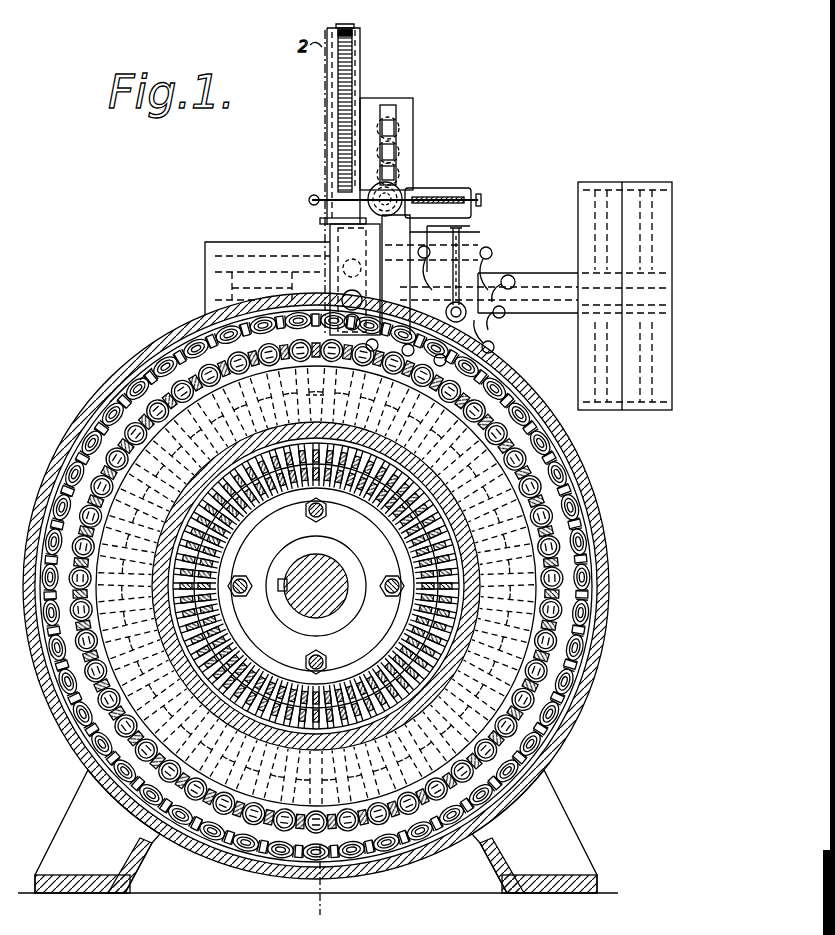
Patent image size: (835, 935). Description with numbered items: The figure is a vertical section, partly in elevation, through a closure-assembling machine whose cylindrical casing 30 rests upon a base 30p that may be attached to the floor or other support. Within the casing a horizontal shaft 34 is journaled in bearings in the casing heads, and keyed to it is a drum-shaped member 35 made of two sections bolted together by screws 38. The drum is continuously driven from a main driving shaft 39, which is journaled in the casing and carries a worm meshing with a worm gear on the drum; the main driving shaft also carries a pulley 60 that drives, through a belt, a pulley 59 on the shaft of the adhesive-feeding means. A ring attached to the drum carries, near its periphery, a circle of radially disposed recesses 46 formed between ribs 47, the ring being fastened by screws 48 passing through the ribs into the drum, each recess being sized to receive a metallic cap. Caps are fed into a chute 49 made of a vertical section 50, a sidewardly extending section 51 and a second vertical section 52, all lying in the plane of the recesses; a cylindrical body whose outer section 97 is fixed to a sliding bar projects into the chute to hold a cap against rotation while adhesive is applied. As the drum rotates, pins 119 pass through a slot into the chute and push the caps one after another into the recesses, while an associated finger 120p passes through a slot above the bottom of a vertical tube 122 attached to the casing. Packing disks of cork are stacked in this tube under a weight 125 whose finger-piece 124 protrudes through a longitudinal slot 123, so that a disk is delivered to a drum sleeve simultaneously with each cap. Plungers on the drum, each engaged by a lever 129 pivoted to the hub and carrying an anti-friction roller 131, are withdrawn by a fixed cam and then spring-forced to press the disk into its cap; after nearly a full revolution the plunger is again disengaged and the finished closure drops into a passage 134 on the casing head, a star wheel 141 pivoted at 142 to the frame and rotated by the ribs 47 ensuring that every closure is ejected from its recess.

The cylindrical casing 30 is at (596, 530).
The base 30p is at (592, 888).
The horizontal shaft 34 is at (315, 598).
The drum-shaped member 35 is at (470, 600).
The screws 38 is at (330, 512).
The main driving shaft 39 is at (546, 284).
The recess 46 is at (556, 447).
The ribs 47 is at (452, 512).
The screws 48 is at (465, 625).
The chute 49 is at (412, 108).
The vertical section 50 is at (403, 156).
The sidewardly extending section 51 is at (326, 207).
The second vertical section 52 is at (336, 250).
The pulley 59 is at (466, 242).
The pulley 60 is at (505, 314).
The section of cylindrical body 97 is at (400, 194).
The pin 119 is at (158, 378).
The finger 120p is at (118, 390).
The vertical tube 122 is at (336, 88).
The longitudinal slot 123 is at (352, 64).
The finger-piece 124 is at (353, 42).
The weight 125 is at (348, 26).
The lever 129 is at (440, 545).
The anti-friction rollers 131 is at (568, 508).
The passage 134 is at (322, 404).
The star wheel 141 is at (512, 275).
The pivot 142 is at (494, 330).